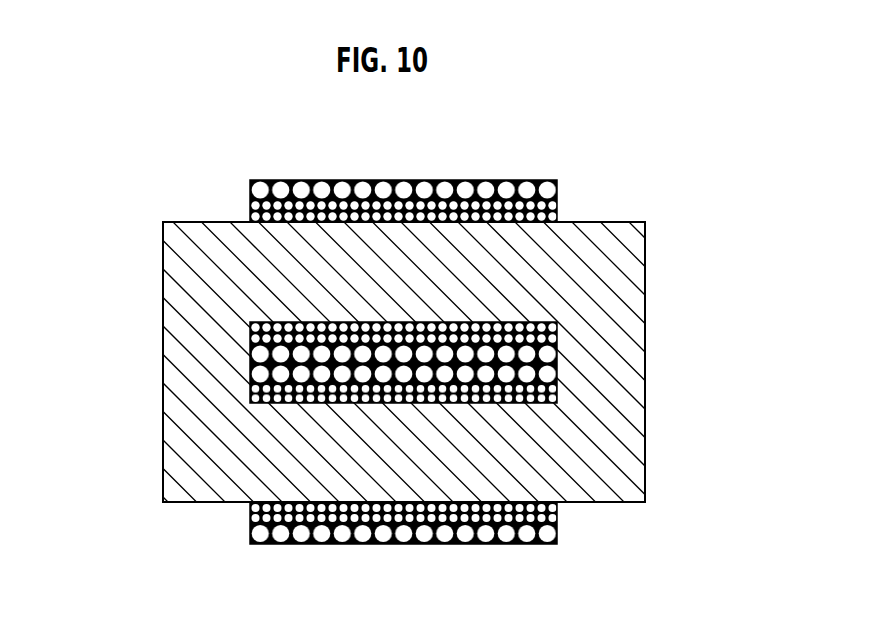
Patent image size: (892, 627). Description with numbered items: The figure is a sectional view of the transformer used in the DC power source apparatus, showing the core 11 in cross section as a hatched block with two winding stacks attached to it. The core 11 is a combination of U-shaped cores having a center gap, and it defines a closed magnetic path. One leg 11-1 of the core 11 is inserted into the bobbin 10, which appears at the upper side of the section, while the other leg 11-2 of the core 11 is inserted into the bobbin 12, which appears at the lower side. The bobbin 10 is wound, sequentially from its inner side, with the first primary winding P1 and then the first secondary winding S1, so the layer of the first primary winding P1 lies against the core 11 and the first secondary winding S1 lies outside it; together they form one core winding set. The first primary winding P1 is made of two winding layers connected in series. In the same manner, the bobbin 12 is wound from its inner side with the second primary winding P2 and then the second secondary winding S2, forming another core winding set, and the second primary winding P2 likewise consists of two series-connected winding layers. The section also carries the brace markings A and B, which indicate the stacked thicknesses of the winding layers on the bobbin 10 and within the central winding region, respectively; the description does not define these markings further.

The bobbin 10 is at (248, 200).
The core 11 is at (190, 503).
The leg of the core 11-1 is at (185, 221).
The leg of the core 11-2 is at (180, 503).
The bobbin 12 is at (247, 527).
The first secondary winding S1 is at (557, 187).
The first primary winding P1 is at (557, 210).
The second secondary winding S2 is at (557, 372).
The second primary winding P2 is at (557, 395).
The thickness A is at (237, 180).
The thickness B is at (245, 363).